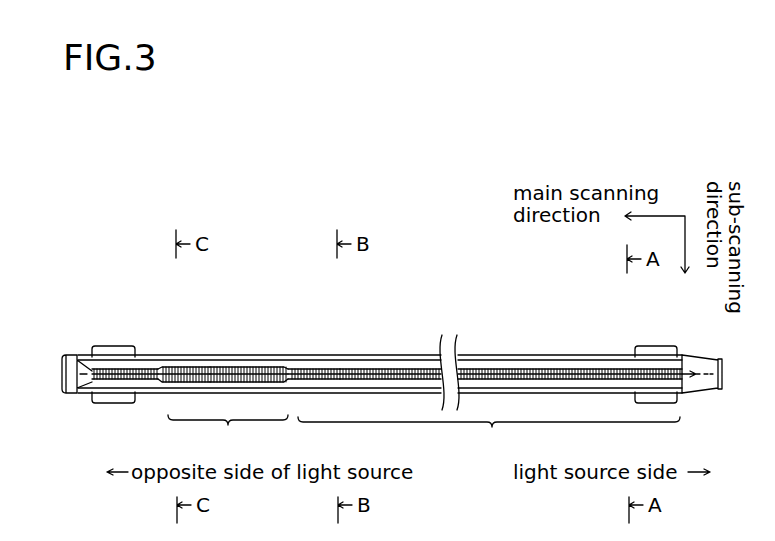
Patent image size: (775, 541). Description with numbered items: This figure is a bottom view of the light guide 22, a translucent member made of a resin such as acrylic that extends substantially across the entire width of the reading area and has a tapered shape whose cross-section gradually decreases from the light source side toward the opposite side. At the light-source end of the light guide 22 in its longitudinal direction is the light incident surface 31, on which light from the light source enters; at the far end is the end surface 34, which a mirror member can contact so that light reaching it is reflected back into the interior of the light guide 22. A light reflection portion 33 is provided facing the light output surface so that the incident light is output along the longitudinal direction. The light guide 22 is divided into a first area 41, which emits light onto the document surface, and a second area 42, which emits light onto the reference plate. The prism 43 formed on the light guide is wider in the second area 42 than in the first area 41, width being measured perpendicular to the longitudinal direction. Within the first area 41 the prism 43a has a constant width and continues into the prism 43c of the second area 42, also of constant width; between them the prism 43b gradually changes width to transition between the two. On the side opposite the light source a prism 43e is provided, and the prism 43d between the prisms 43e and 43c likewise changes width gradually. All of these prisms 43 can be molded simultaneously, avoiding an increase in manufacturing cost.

The light guide 22 is at (525, 334).
The light incident surface 31 is at (723, 380).
The light reflection portion 33 is at (603, 359).
The end surface 34 is at (60, 380).
The first area 41 is at (489, 435).
The second area 42 is at (228, 435).
The prism 43 is at (377, 306).
The prism 43a is at (370, 369).
The prism 43b is at (293, 369).
The prism 43c is at (225, 367).
The prism 43d is at (163, 368).
The prism 43e is at (115, 369).